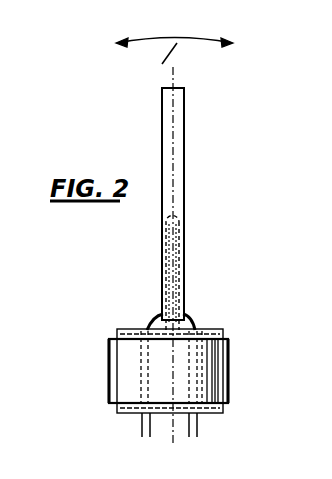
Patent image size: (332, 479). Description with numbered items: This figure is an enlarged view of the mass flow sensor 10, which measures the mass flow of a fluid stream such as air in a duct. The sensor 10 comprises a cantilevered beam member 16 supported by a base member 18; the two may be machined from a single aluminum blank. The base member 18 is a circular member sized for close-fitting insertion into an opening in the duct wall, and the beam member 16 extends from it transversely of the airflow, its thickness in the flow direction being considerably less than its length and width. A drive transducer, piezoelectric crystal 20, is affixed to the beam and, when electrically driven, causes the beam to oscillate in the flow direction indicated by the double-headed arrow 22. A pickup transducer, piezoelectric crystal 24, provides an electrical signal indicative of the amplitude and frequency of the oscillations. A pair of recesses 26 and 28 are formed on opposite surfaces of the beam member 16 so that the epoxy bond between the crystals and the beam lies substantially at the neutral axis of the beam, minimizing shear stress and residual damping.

The sensor 10 is at (194, 106).
The cantilevered beam member 16 is at (184, 150).
The base member 18 is at (212, 328).
The piezoelectric crystal 20 is at (182, 262).
The double-headed arrow 22 is at (137, 40).
The piezoelectric crystal 24 is at (168, 262).
The recess 26 is at (181, 218).
The recess 28 is at (165, 219).